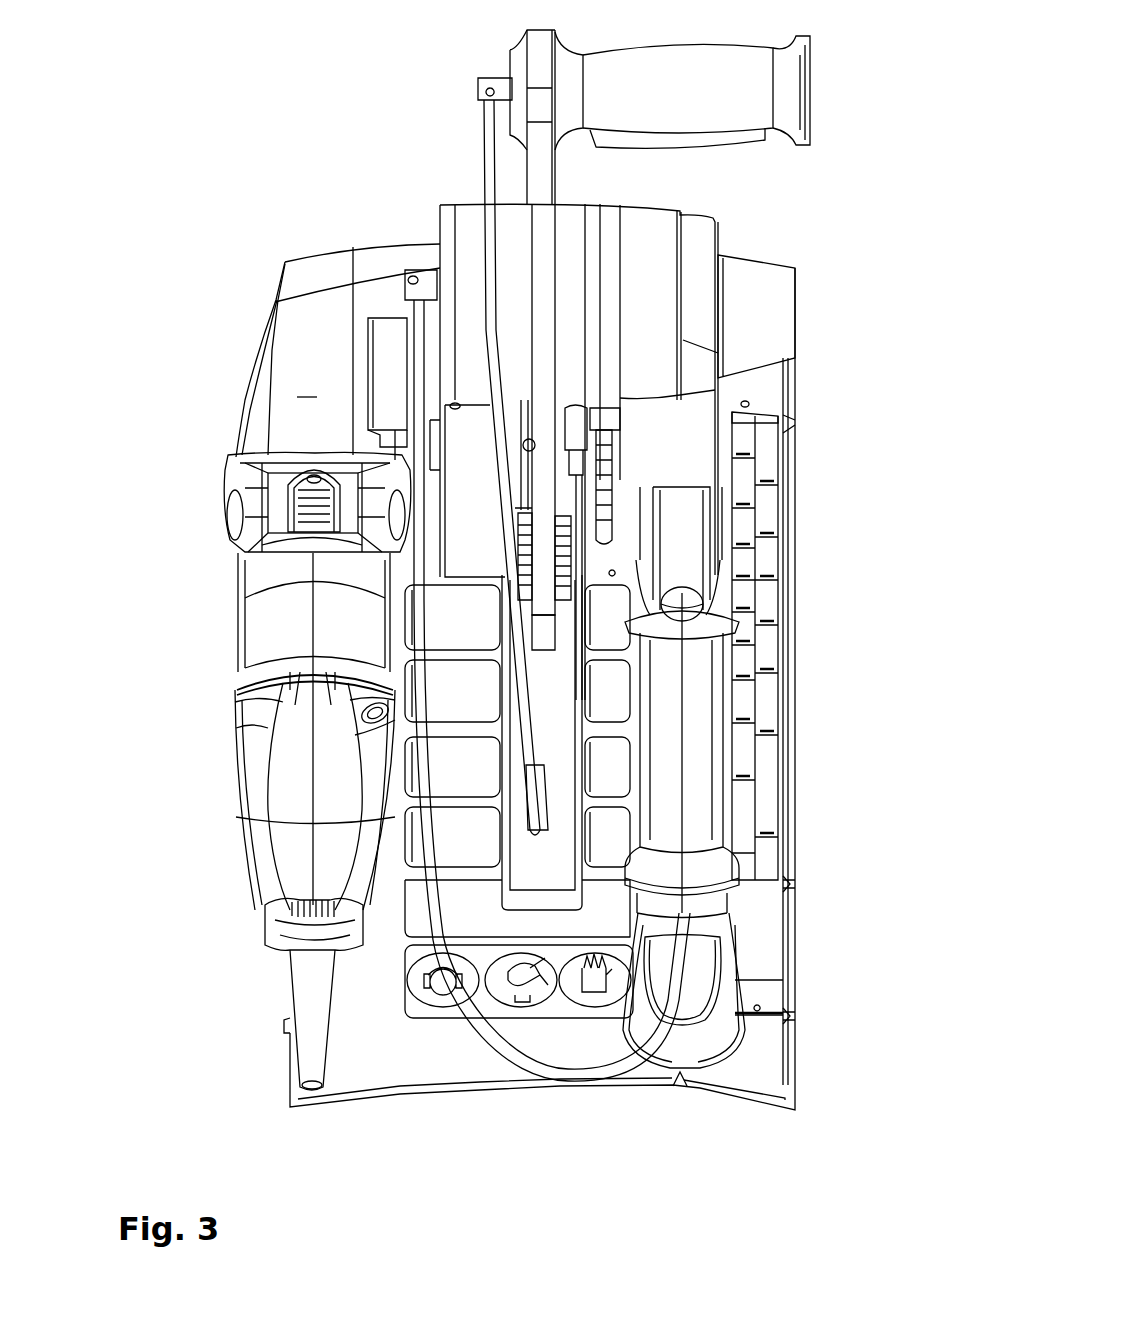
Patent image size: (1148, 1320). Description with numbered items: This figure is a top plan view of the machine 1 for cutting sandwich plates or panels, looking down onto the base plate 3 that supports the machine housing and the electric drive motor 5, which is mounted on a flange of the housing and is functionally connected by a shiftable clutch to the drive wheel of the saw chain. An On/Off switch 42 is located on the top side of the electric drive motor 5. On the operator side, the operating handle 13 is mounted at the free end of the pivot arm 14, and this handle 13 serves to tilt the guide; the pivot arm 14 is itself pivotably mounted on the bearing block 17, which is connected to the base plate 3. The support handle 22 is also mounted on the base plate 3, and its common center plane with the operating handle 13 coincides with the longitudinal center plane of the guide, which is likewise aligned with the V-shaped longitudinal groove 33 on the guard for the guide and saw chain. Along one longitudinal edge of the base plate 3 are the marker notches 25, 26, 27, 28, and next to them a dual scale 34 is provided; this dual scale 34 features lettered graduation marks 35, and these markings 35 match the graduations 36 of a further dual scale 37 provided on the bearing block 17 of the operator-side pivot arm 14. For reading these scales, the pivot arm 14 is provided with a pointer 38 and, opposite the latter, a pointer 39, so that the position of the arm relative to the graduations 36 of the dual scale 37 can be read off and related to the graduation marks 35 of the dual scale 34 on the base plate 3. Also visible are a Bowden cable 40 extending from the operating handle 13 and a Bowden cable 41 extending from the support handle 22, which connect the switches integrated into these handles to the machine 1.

The machine 1 is at (318, 232).
The base plate 3 is at (800, 805).
The electric drive motor 5 is at (287, 667).
The handle 13 is at (698, 97).
The pivot arm 14 is at (546, 183).
The bearing block 17 is at (512, 622).
The support handle 22 is at (705, 757).
The marker notch 25 is at (790, 425).
The marker notch 26 is at (787, 558).
The marker notch 27 is at (797, 886).
The marker notch 28 is at (797, 1017).
The V-shaped longitudinal groove 33 is at (686, 355).
The dual scale 34 is at (775, 700).
The graduation marks 35 is at (775, 630).
The graduations 36 is at (522, 525).
The dual scale 37 is at (573, 562).
The pointer 38 is at (556, 514).
The pointer 39 is at (520, 518).
The Bowden cable 40 is at (485, 182).
The Bowden cable 41 is at (415, 355).
The On/Off switch 42 is at (295, 490).